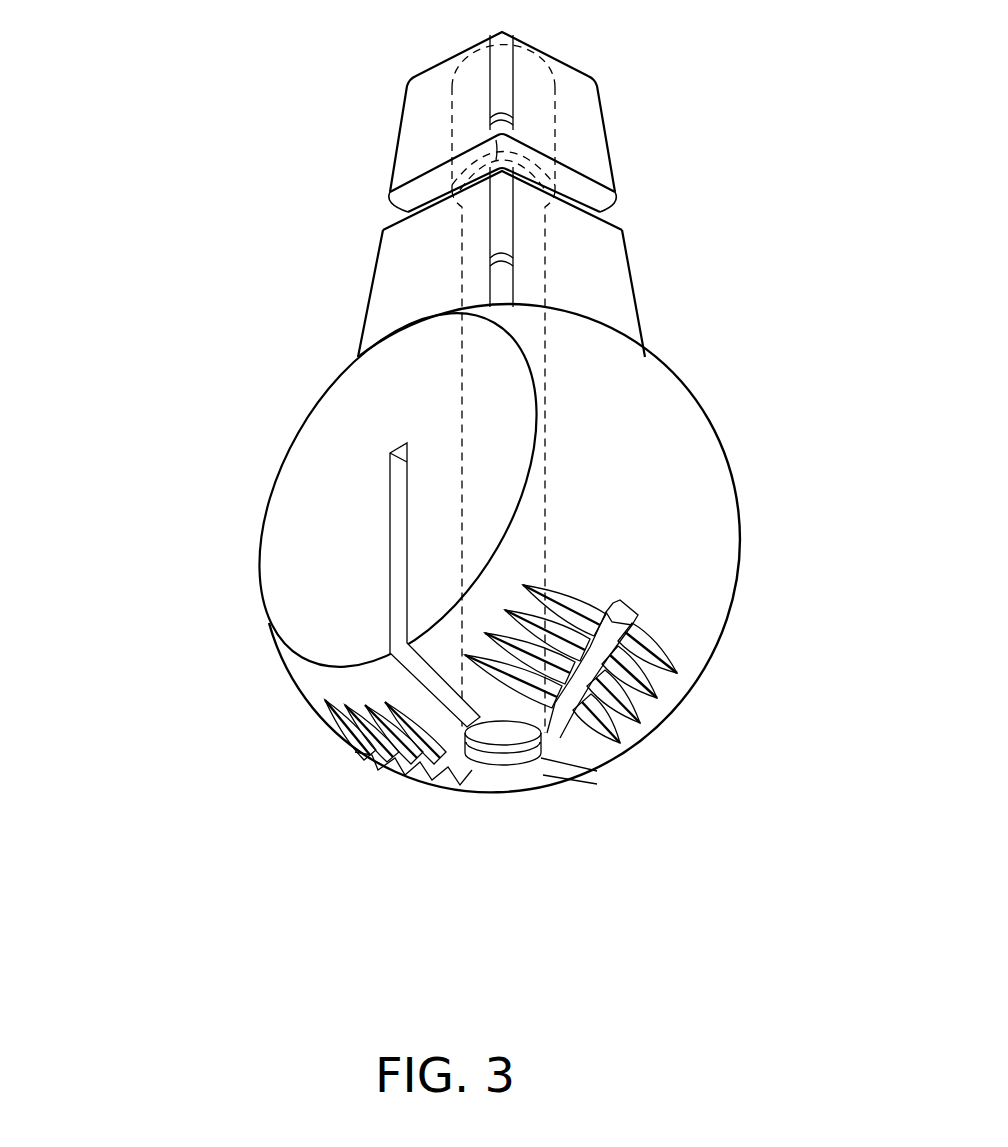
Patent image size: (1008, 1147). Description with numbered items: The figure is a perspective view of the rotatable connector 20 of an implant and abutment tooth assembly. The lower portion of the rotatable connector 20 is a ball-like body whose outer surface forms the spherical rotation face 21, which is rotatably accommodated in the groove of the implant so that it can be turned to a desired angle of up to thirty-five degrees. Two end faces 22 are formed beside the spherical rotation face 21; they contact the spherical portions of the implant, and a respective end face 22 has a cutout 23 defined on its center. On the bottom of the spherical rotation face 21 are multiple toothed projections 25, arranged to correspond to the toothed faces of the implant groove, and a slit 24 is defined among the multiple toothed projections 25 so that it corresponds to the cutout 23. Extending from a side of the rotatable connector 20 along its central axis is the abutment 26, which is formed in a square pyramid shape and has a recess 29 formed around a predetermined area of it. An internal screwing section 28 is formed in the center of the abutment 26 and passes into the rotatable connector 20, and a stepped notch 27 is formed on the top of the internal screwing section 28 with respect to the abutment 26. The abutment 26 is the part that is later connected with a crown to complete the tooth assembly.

The rotatable connector 20 is at (185, 440).
The spherical rotation face 21 is at (668, 453).
The end faces 22 is at (333, 413).
The cutout 23 is at (400, 523).
The slit 24 is at (560, 693).
The toothed projections 25 is at (667, 702).
The abutment 26 is at (600, 250).
The stepped notch 27 is at (450, 135).
The internal screwing section 28 is at (548, 272).
The recess 29 is at (395, 213).